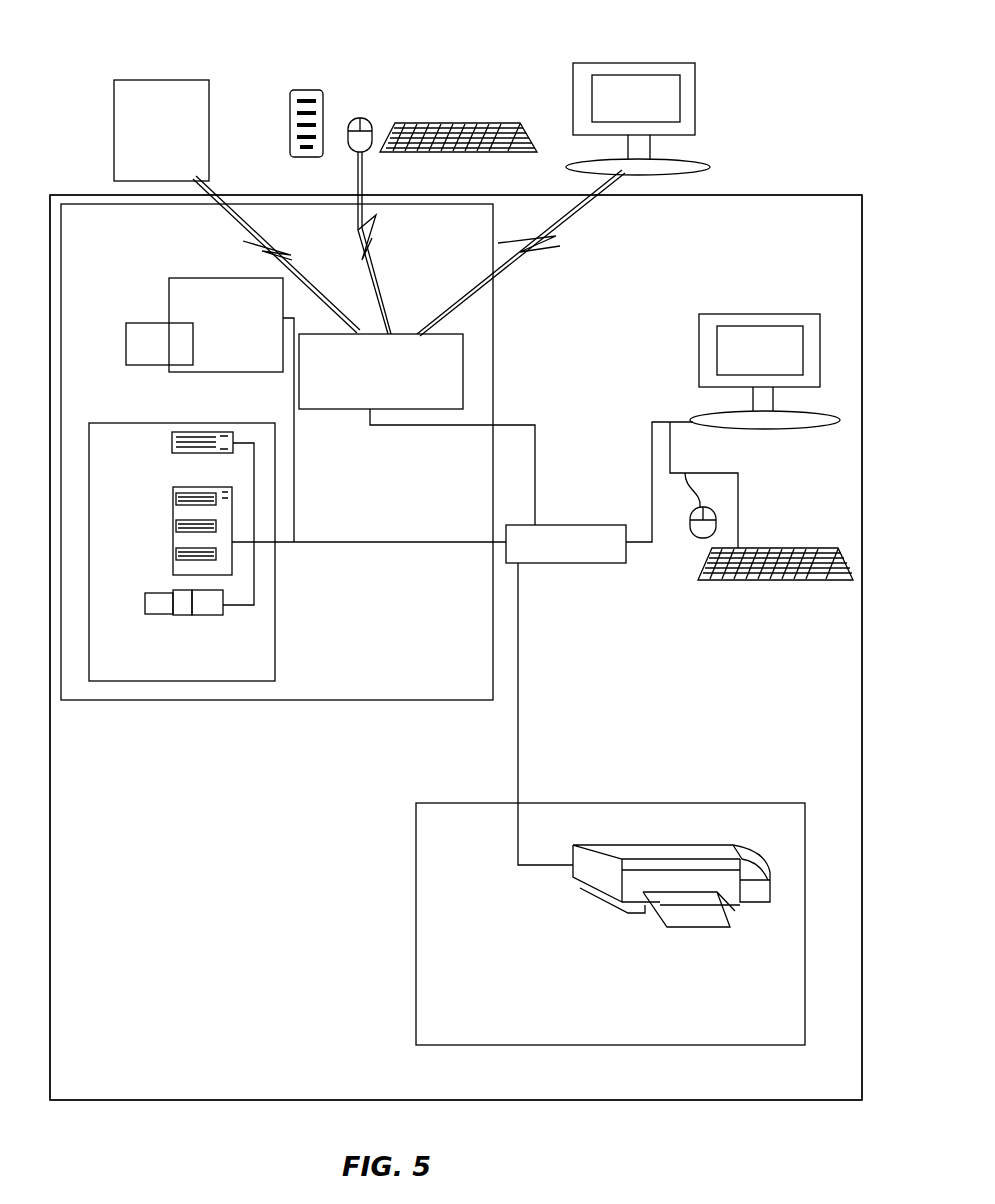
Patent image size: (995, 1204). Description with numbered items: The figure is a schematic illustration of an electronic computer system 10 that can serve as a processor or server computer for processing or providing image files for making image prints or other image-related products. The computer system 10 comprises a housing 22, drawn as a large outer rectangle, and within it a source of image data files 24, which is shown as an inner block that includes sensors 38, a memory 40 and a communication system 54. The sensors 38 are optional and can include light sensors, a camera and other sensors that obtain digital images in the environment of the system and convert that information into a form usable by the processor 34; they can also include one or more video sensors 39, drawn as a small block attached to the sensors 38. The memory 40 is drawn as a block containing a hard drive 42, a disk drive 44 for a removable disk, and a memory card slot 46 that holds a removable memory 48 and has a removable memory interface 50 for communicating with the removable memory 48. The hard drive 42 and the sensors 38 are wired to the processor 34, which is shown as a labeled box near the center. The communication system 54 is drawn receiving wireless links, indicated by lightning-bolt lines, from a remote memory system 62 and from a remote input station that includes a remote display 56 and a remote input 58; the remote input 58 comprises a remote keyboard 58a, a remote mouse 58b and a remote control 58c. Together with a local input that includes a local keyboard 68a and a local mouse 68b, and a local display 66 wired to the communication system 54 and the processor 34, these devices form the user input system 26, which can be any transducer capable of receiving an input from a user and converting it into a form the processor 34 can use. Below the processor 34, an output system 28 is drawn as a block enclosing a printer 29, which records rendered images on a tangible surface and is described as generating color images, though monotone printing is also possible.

The computer system 10 is at (125, 1090).
The housing 22 is at (222, 1102).
The source of image data files 24 is at (118, 705).
The user input system 26 is at (555, 89).
The output system 28 is at (416, 923).
The printer 29 is at (580, 890).
The processor 34 is at (592, 525).
The sensors 38 is at (184, 278).
The video sensors 39 is at (146, 323).
The memory 40 is at (177, 523).
The hard drive 42 is at (173, 532).
The disk drive 44 is at (172, 443).
The memory card slot 46 is at (205, 615).
The removable memory 48 is at (157, 614).
The removable memory interface 50 is at (180, 615).
The communication system 54 is at (315, 409).
The remote display 56 is at (645, 63).
The remote input 58 is at (411, 95).
The remote keyboard 58a is at (457, 123).
The remote mouse 58b is at (358, 118).
The remote control 58c is at (306, 90).
The remote memory system 62 is at (180, 80).
The local display 66 is at (797, 314).
The local keyboard 68a is at (772, 548).
The local mouse 68b is at (690, 530).